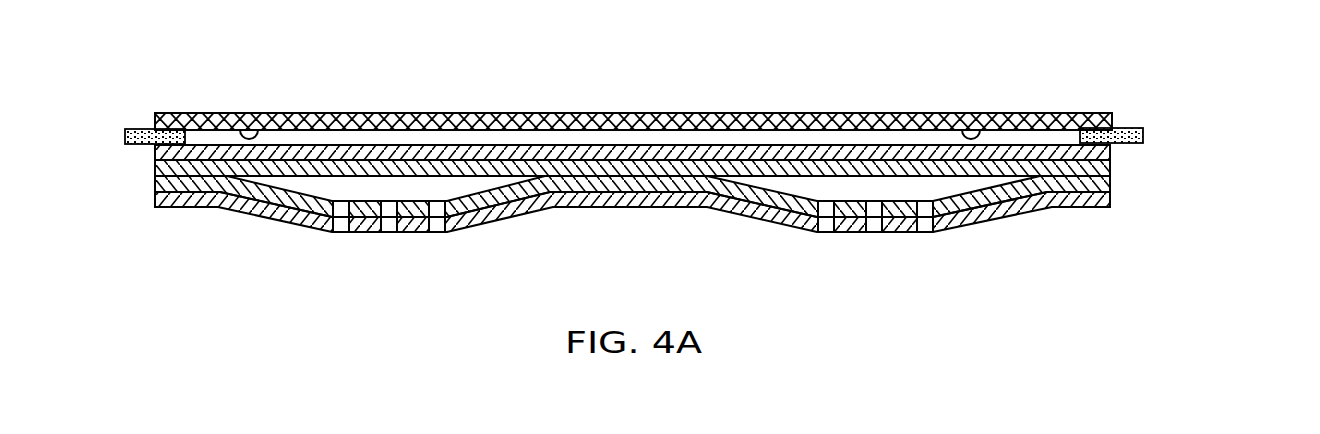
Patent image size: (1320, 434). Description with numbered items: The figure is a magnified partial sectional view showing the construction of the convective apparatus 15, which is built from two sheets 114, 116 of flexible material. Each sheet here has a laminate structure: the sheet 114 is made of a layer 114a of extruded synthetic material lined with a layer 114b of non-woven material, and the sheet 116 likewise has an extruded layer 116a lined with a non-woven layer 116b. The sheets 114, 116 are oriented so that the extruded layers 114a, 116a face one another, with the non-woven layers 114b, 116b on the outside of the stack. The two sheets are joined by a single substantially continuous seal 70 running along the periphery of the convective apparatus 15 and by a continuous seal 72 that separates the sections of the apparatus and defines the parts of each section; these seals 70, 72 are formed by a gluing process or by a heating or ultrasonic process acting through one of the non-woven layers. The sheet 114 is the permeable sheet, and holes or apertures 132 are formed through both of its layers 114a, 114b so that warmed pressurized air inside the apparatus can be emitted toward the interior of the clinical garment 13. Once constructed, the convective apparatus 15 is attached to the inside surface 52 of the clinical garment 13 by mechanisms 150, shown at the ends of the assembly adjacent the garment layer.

The clinical garment 13 is at (650, 113).
The convective apparatus 15 is at (484, 266).
The inside surface 52 is at (243, 129).
The peripheral seal 70 is at (190, 185).
The continuous seal 72 is at (1050, 178).
The permeable sheet 114 is at (654, 201).
The extruded synthetic material layer 114a is at (1113, 183).
The non-woven material layer 114b is at (1113, 200).
The sheet of flexible material 116 is at (654, 144).
The extruded synthetic material layer 116a is at (1113, 165).
The non-woven material layer 116b is at (1113, 147).
The apertures 132 is at (390, 222).
The attachment mechanisms 150 is at (146, 129).